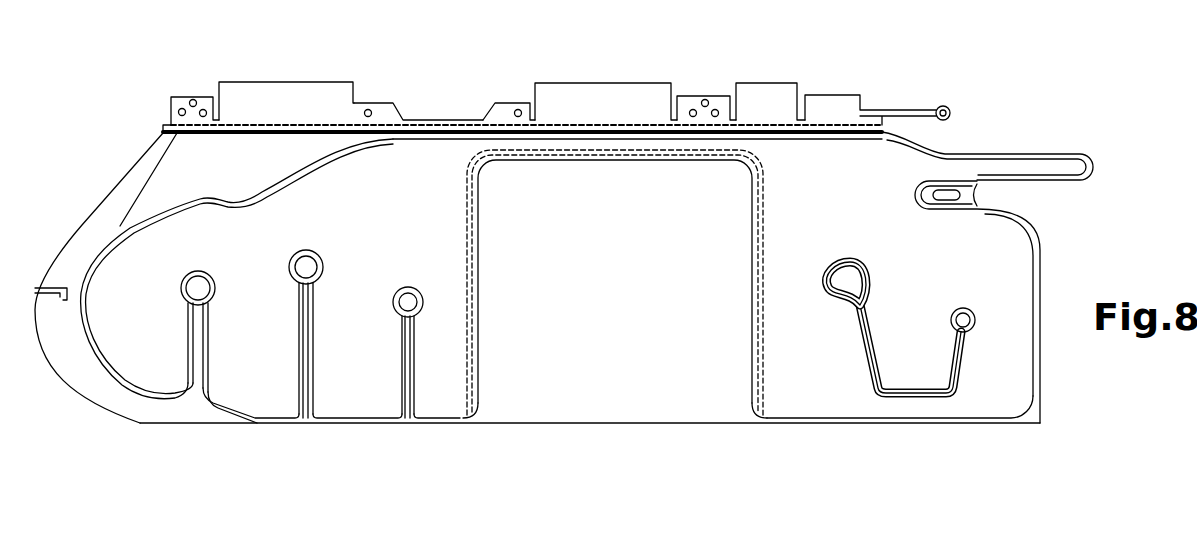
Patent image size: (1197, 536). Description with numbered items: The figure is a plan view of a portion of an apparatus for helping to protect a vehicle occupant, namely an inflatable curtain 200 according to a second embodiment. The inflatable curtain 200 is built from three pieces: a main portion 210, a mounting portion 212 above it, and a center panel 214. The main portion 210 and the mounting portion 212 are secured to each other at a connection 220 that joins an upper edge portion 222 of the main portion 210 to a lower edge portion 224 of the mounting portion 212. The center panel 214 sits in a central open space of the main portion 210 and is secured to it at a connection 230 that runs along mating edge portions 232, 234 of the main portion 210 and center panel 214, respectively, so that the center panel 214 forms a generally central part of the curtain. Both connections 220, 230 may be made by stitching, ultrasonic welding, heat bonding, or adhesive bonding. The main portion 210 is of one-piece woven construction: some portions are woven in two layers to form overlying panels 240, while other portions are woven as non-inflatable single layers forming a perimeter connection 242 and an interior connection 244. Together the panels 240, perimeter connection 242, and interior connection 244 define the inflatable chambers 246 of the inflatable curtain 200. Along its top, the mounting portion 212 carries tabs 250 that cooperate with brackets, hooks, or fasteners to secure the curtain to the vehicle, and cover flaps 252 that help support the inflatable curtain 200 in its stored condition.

The inflatable curtain 200 is at (62, 124).
The main portion 210 is at (255, 378).
The mounting portion 212 is at (580, 92).
The center panel 214 is at (625, 390).
The connection 220 is at (302, 125).
The upper edge portion 222 is at (446, 130).
The lower edge portion 224 is at (597, 130).
The connection 230 is at (760, 248).
The mating edge portion 232 is at (752, 312).
The mating edge portion 234 is at (763, 362).
The overlying panels 240 is at (847, 372).
The perimeter connection 242 is at (970, 423).
The interior connection 244 is at (210, 307).
The inflatable chambers 246 is at (240, 342).
The tabs 250 is at (183, 100).
The cover flaps 252 is at (268, 97).